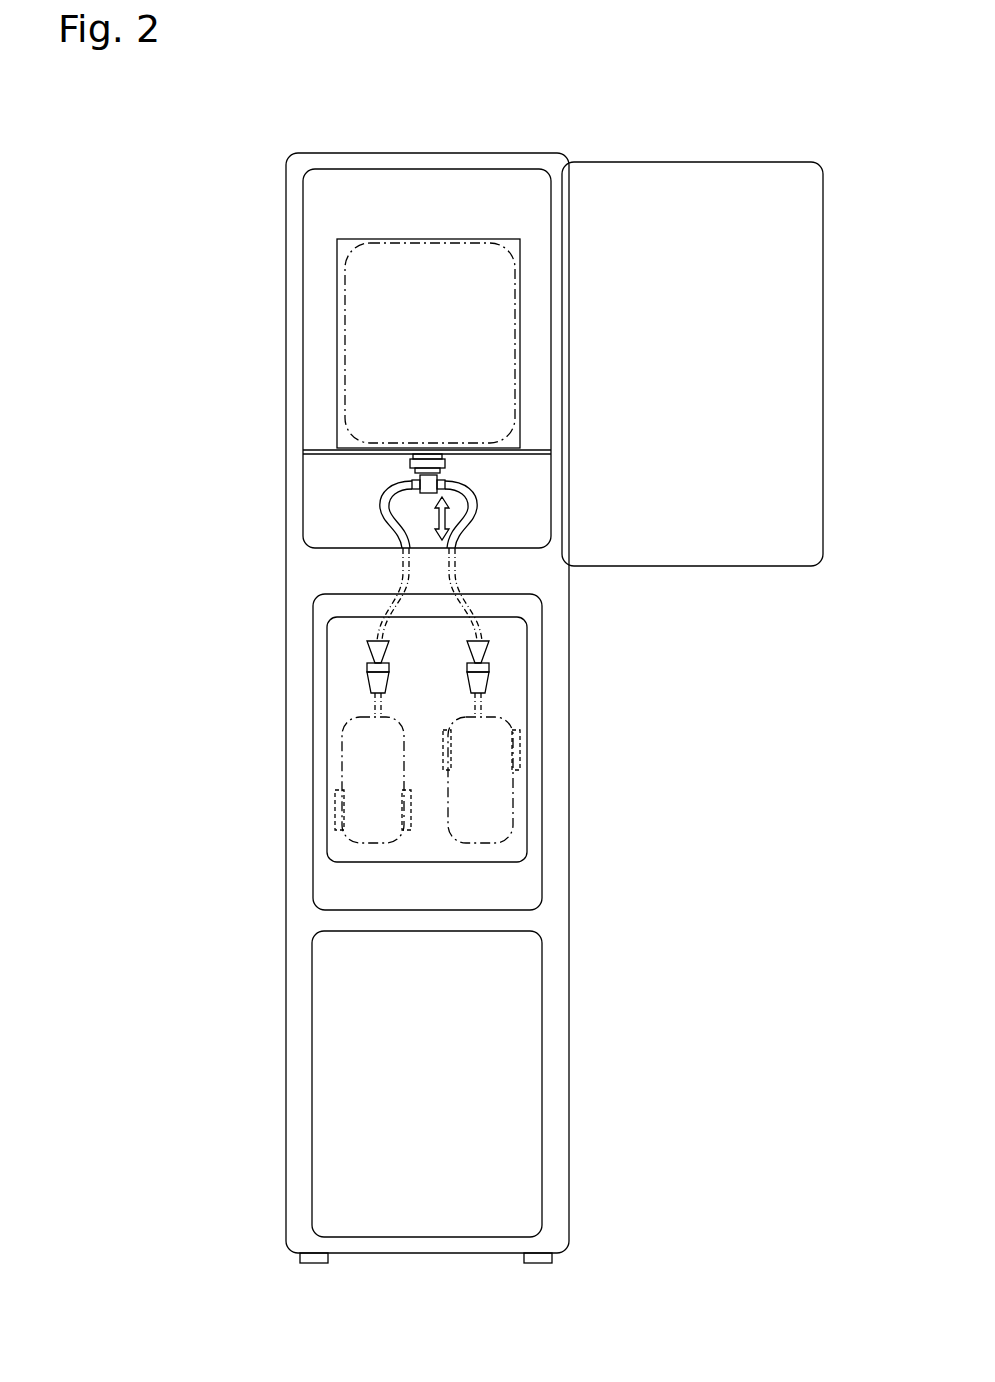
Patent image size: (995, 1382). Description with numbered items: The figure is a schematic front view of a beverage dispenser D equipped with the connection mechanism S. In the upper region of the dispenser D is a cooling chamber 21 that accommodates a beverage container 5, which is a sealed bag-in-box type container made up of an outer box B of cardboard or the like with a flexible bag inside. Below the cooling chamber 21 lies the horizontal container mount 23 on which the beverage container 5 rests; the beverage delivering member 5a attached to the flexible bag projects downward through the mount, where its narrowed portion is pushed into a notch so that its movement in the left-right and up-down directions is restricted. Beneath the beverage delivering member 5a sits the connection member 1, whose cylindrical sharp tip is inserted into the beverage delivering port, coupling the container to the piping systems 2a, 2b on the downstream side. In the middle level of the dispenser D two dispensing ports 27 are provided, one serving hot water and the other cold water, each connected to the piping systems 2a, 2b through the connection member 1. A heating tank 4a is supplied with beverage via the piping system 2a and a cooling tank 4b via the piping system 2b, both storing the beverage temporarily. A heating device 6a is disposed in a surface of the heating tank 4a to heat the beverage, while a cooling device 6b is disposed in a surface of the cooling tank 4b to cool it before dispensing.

The connection mechanism S is at (347, 512).
The beverage dispenser D is at (625, 110).
The cooling chamber 21 is at (437, 187).
The beverage container 5 is at (350, 268).
The outer box B is at (378, 238).
The container mount 23 is at (481, 455).
The beverage delivering member 5a is at (413, 458).
The connection member 1 is at (425, 494).
The piping system 2a is at (383, 517).
The piping system 2b is at (480, 517).
The dispensing port 27 is at (375, 678).
The heating tank 4a is at (345, 748).
The cooling tank 4b is at (510, 792).
The heating device 6a is at (340, 818).
The cooling device 6b is at (518, 750).